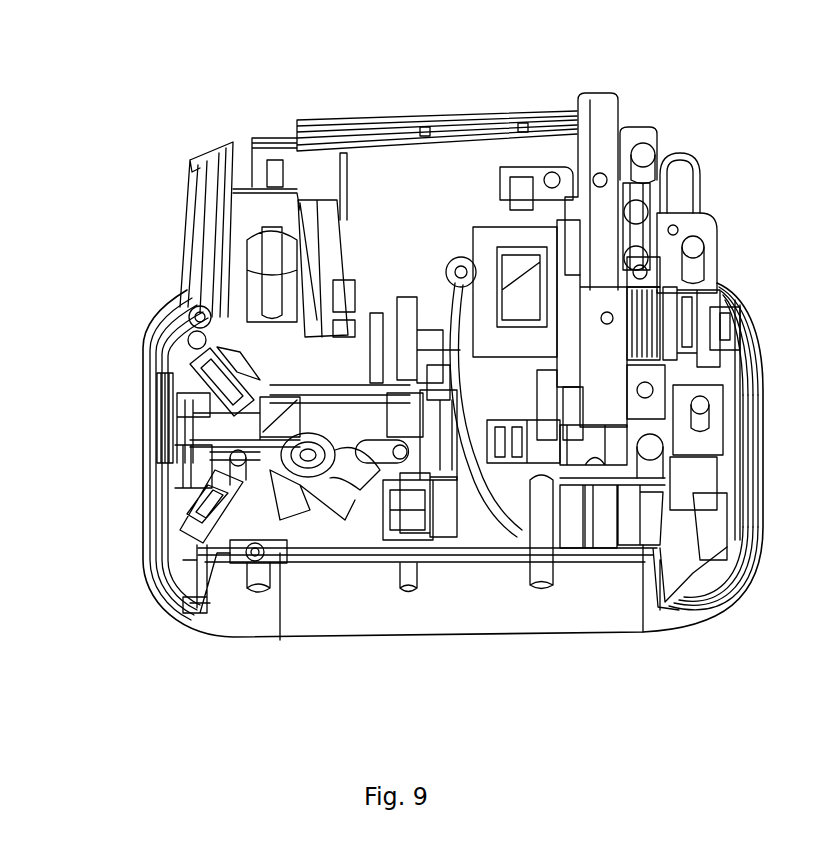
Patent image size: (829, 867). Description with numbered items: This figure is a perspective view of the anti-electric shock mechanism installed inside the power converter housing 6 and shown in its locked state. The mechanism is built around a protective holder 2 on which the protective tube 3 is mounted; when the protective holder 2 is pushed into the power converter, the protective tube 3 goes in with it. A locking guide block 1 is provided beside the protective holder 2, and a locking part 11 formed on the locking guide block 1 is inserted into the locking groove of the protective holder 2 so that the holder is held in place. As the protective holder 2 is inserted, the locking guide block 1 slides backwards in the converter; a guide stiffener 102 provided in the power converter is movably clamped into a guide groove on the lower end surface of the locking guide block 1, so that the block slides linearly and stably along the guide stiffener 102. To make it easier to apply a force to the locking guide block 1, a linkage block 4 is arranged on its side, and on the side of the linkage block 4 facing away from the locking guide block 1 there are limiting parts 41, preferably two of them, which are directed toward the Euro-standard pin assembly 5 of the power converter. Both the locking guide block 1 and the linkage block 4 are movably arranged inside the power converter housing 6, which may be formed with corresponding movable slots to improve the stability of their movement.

The locking guide block 1 is at (315, 337).
The guide stiffener 102 is at (367, 364).
The protective holder 2 is at (264, 380).
The protective tube 3 is at (249, 315).
The linkage block 4 is at (401, 354).
The limiting part 41 is at (437, 382).
The Euro-standard pin assembly 5 is at (519, 243).
The power converter housing 6 is at (175, 505).
The locking part 11 is at (213, 597).